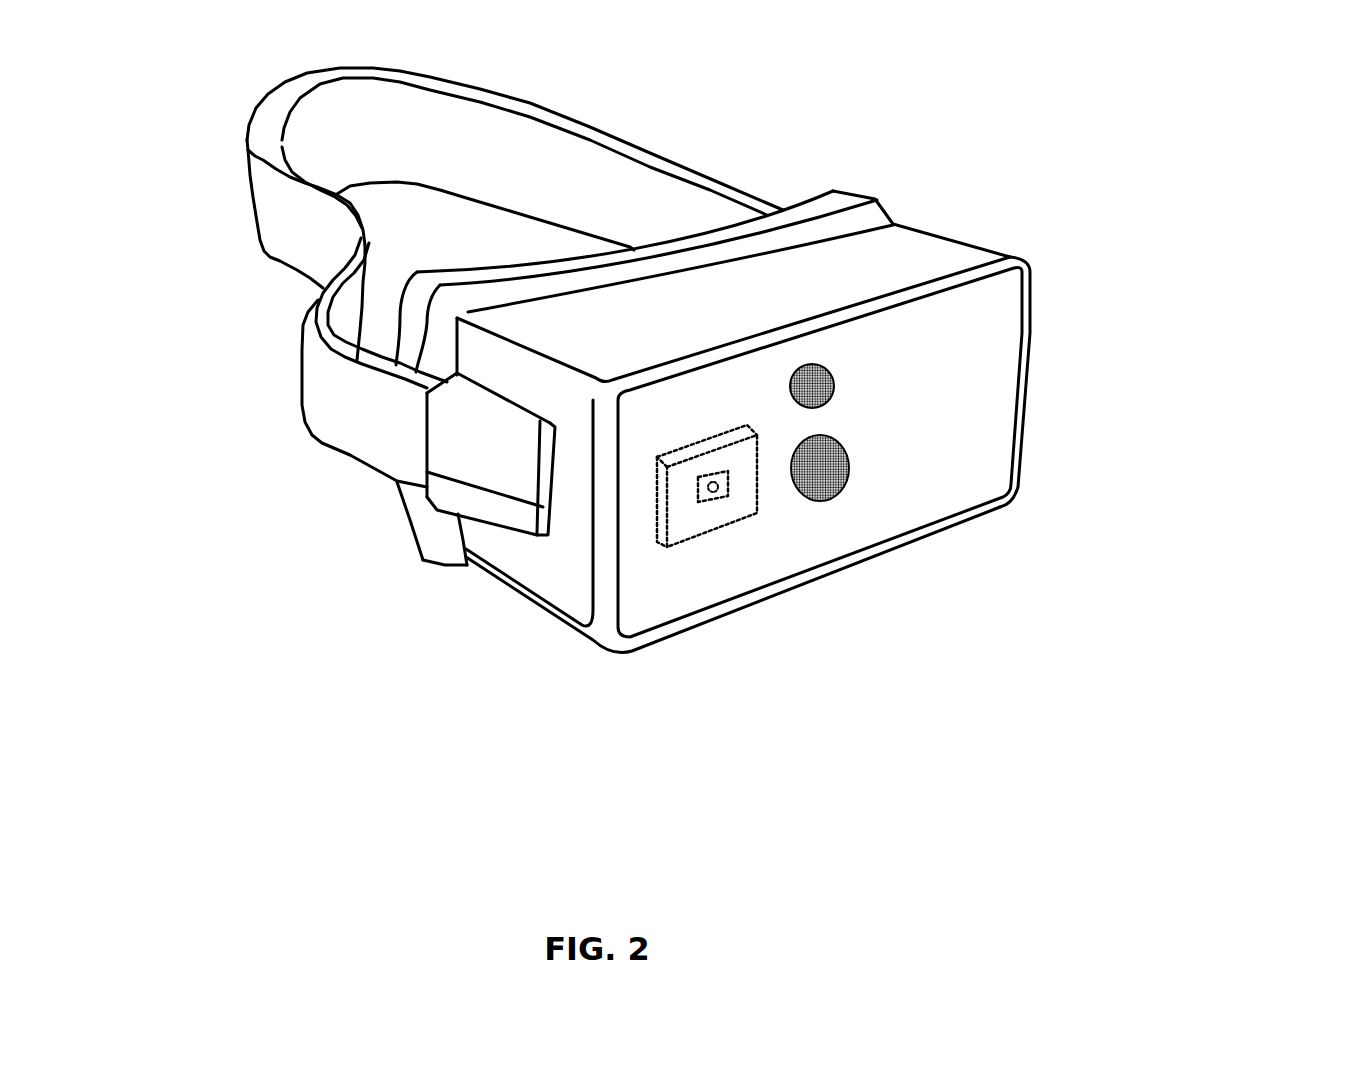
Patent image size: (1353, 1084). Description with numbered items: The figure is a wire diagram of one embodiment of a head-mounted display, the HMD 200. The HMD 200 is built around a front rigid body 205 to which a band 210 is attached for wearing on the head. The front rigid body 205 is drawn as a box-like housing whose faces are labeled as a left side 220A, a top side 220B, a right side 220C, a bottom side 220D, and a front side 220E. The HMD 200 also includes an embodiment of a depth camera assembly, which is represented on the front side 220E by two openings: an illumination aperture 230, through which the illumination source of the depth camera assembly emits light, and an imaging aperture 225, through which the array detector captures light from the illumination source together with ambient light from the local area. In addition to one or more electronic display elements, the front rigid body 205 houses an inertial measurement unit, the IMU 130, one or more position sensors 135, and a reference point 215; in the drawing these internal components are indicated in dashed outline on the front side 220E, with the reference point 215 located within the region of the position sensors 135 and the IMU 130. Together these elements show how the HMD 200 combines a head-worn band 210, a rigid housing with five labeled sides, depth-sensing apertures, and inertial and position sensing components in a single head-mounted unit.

The HMD 200 is at (135, 64).
The band 210 is at (647, 147).
The front rigid body 205 is at (1023, 257).
The left side 220A is at (986, 245).
The top side 220B is at (560, 320).
The right side 220C is at (560, 560).
The bottom side 220D is at (505, 612).
The front side 220E is at (643, 598).
The illumination aperture 230 is at (833, 371).
The imaging aperture 225 is at (849, 470).
The IMU 130 is at (757, 505).
The position sensors 135 is at (700, 507).
The reference point 215 is at (713, 490).